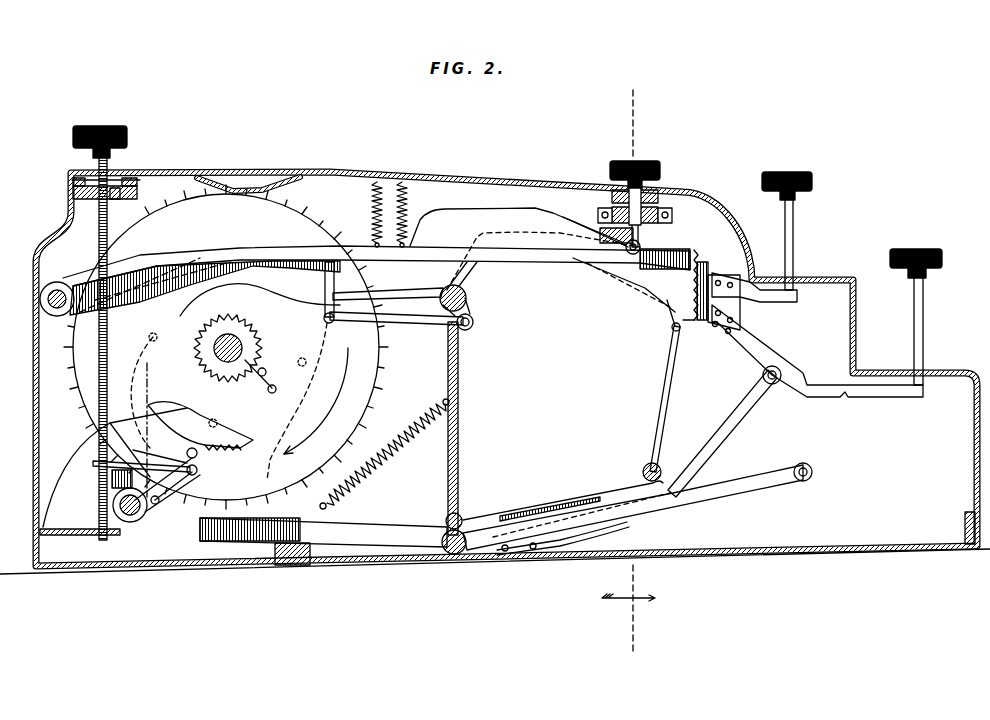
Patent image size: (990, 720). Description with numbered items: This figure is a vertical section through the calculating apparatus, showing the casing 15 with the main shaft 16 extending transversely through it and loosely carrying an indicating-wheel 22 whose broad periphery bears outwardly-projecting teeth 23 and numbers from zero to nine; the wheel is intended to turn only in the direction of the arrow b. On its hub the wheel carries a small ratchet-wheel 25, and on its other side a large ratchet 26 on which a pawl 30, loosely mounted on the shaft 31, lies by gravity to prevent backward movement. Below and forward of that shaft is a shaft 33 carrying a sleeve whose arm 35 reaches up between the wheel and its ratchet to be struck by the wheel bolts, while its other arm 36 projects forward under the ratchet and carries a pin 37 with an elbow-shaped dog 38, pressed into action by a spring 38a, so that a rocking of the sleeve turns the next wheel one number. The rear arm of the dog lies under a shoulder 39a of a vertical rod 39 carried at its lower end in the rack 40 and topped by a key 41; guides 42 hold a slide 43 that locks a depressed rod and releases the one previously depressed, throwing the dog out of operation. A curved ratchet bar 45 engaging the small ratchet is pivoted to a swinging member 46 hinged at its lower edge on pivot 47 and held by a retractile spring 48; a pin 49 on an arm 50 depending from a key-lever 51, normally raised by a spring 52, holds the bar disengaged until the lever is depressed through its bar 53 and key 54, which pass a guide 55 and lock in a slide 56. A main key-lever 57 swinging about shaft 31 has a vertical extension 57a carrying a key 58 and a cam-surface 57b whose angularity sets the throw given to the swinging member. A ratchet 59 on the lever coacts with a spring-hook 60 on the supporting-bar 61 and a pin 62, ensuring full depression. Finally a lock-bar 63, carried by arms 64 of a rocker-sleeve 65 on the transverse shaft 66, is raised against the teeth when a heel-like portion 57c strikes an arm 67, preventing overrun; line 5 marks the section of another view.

The section line 5 5 is at (628, 372).
The casing 15 is at (973, 450).
The main shaft 16 is at (228, 350).
The indicating-wheels 22 is at (226, 347).
The teeth 23 is at (262, 500).
The small ratchet-wheel 25 is at (262, 344).
The large ratchet 26 is at (220, 437).
The pawl 30 is at (376, 271).
The shaft 31 is at (57, 316).
The shaft 33 is at (130, 522).
The arm 35 is at (110, 493).
The arm 36 is at (150, 475).
The pin 37 is at (196, 474).
The elbow-shaped dog 38 is at (198, 460).
The springs 38a is at (160, 505).
The rods 39 is at (98, 238).
The shoulders 39a is at (105, 463).
The rack 40 is at (78, 536).
The keys 41 is at (128, 135).
The guides 42 is at (138, 190).
The slide 43 is at (116, 200).
The ratchet bar 45 is at (419, 325).
The swinging member 46 is at (459, 375).
The pivot 47 is at (460, 516).
The retractile spring 48 is at (388, 462).
The pins 49 is at (337, 323).
The arms 50 is at (334, 283).
The key-levers 51 is at (418, 260).
The retractile springs 52 is at (375, 200).
The bars 53 is at (641, 243).
The keys 54 is at (661, 168).
The guide 55 is at (672, 216).
The slide 56 is at (663, 198).
The main key-levers 57 is at (542, 260).
The vertical extensions 57a is at (795, 230).
The cam-surface 57b is at (477, 282).
The heel-like portions 57c is at (780, 306).
The keys 58 is at (815, 181).
The ratchet 59 is at (718, 322).
The spring-hook 60 is at (668, 392).
The supporting-bar 61 is at (650, 468).
The pins 62 is at (673, 330).
The lock-bar 63 is at (197, 524).
The arms 64 is at (358, 535).
The rocker-sleeve 65 is at (466, 541).
The transverse shaft 66 is at (446, 541).
The arms 67 is at (722, 437).
The arrow b is at (317, 401).